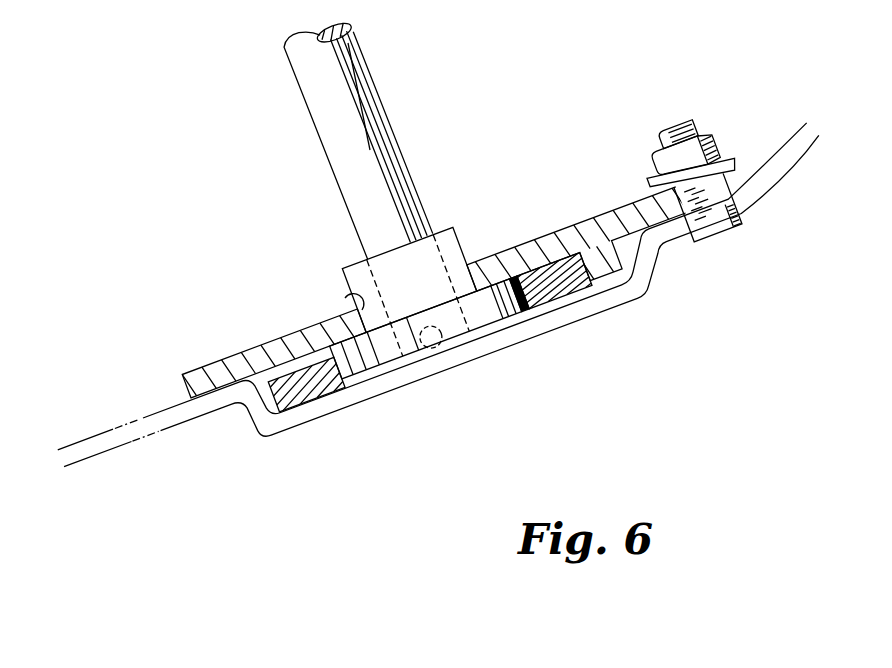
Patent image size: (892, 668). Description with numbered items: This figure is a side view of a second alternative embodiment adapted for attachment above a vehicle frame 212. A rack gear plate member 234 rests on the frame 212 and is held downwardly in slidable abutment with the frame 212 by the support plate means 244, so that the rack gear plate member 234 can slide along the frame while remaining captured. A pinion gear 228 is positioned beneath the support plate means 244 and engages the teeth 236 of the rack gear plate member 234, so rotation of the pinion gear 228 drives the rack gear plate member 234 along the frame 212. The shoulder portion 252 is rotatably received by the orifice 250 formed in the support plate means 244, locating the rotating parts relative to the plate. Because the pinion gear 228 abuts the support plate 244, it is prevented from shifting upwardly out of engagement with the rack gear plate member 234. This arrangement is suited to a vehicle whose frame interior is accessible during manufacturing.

The vehicle frame 212 is at (648, 292).
The pinion gear 228 is at (360, 384).
The rack gear plate member 234 is at (568, 313).
The teeth 236 is at (503, 323).
The support plate means 244 is at (528, 238).
The orifice 250 is at (345, 298).
The shoulder portion 252 is at (460, 242).